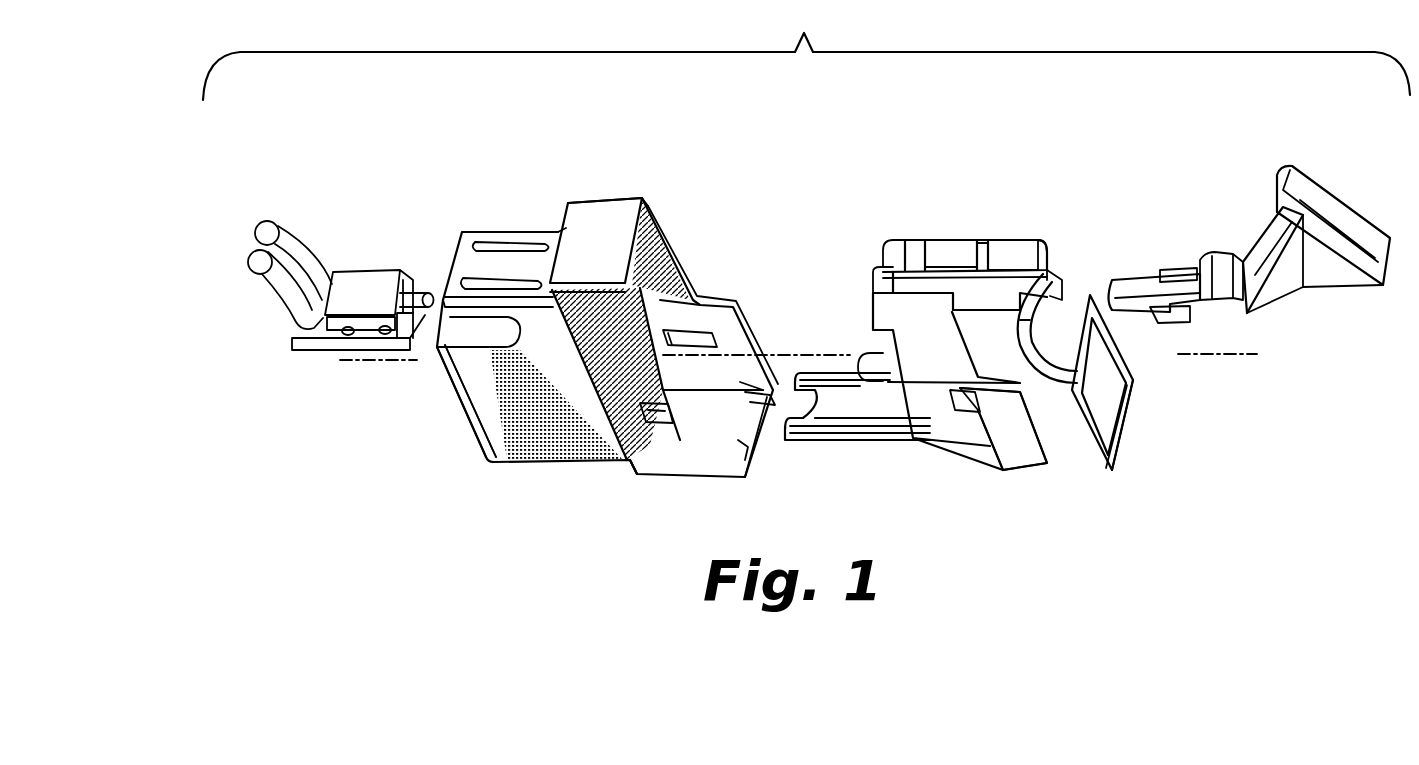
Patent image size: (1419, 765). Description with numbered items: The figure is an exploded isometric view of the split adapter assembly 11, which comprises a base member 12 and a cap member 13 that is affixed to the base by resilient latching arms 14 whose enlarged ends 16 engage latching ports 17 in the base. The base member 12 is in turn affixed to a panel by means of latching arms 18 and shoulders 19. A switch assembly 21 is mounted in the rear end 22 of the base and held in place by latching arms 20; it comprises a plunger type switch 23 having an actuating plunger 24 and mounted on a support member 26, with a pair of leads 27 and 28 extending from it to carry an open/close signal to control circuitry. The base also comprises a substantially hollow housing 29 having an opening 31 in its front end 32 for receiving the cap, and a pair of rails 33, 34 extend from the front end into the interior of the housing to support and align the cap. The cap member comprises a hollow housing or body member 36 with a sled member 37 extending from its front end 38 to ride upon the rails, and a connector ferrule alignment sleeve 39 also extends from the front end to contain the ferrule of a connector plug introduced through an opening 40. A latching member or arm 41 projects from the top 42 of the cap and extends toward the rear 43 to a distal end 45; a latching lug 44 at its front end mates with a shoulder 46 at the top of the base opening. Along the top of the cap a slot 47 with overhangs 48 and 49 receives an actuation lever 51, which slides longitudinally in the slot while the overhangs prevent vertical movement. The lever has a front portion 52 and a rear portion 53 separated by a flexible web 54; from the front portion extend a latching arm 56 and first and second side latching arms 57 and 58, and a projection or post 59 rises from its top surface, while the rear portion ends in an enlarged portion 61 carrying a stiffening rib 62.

The split adapter assembly 11 is at (806, 50).
The base member 12 is at (537, 443).
The cap member 13 is at (942, 427).
The resilient latching arms 14 is at (1007, 400).
The enlarged ends 16 is at (985, 418).
The latching ports 17 is at (667, 413).
The latching arms 18 is at (492, 258).
The shoulders 19 is at (568, 222).
The latching arms 20 is at (480, 326).
The switch assembly 21 is at (334, 372).
The rear end 22 is at (467, 415).
The plunger type switch 23 is at (357, 275).
The actuating plunger 24 is at (420, 296).
The support member 26 is at (387, 343).
The lead 27 is at (290, 295).
The lead 28 is at (297, 240).
The hollow housing 29 is at (657, 233).
The opening 31 is at (665, 277).
The front end 32 is at (750, 338).
The rail 33 is at (763, 380).
The rail 34 is at (743, 443).
The housing or body member 36 is at (1050, 267).
The sled member 37 is at (860, 437).
The front end 38 is at (893, 397).
The connector ferrule alignment sleeve 39 is at (877, 353).
The opening 40 is at (1100, 373).
The latching member or arm 41 is at (948, 235).
The top 42 is at (1012, 253).
The rear 43 is at (1120, 443).
The latching lug 44 is at (920, 235).
The distal end 45 is at (982, 252).
The shoulder 46 is at (643, 245).
The slot 47 is at (1033, 290).
The overhang 48 is at (1015, 348).
The overhang 49 is at (1038, 263).
The actuation lever 51 is at (1212, 135).
The front portion 52 is at (1198, 334).
The rear portion 53 is at (1328, 296).
The flexible web 54 is at (1237, 313).
The latching arm 56 is at (1135, 280).
The first side latching arm 57 is at (1178, 267).
The second side latching arm 58 is at (1153, 313).
The projection or post 59 is at (1213, 253).
The enlarged portion 61 is at (1320, 203).
The stiffening rib 62 is at (1250, 250).